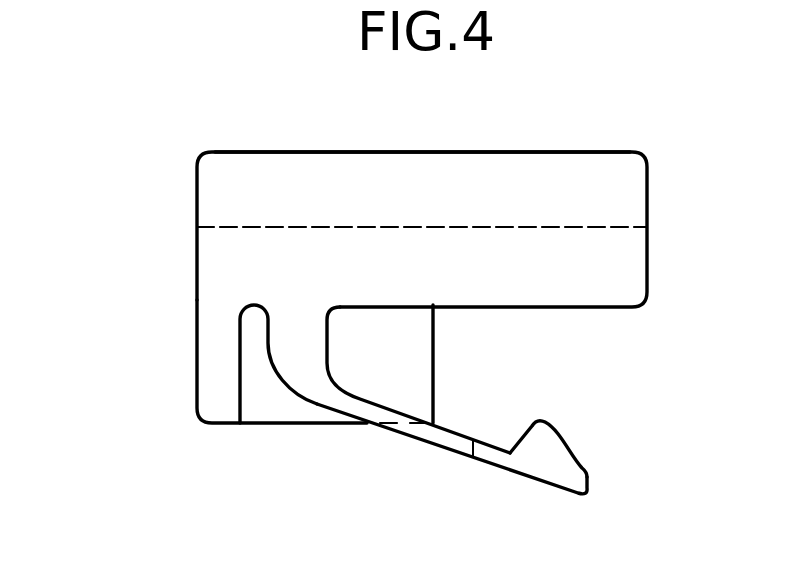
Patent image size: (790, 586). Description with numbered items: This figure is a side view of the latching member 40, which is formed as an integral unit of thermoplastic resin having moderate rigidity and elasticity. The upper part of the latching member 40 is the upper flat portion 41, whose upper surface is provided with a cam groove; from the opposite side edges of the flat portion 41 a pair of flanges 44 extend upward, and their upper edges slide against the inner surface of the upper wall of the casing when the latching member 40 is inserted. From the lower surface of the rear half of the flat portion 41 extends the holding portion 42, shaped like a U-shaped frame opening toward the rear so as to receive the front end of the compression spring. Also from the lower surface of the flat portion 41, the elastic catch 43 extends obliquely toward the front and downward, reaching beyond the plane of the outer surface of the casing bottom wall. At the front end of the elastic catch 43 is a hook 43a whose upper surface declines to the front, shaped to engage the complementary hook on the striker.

The latching member 40 is at (162, 171).
The upper flat portion 41 is at (633, 272).
The holding portion 42 is at (285, 410).
The elastic catch 43 is at (440, 442).
The hook 43a is at (580, 467).
The flanges 44 is at (467, 172).